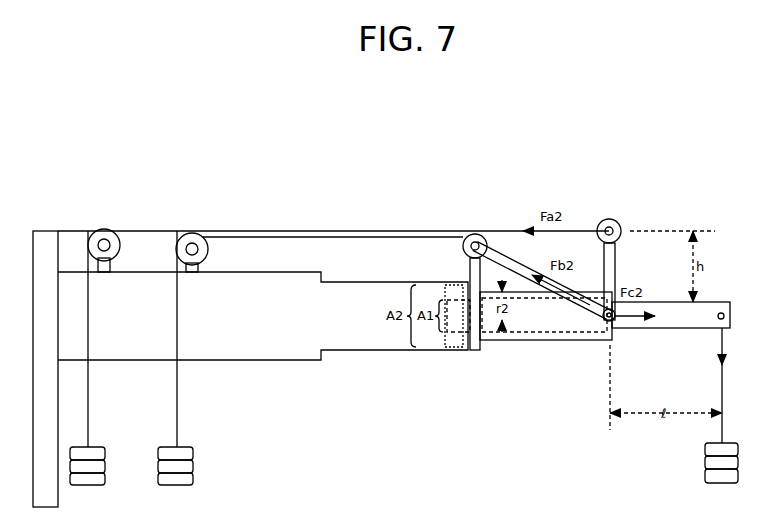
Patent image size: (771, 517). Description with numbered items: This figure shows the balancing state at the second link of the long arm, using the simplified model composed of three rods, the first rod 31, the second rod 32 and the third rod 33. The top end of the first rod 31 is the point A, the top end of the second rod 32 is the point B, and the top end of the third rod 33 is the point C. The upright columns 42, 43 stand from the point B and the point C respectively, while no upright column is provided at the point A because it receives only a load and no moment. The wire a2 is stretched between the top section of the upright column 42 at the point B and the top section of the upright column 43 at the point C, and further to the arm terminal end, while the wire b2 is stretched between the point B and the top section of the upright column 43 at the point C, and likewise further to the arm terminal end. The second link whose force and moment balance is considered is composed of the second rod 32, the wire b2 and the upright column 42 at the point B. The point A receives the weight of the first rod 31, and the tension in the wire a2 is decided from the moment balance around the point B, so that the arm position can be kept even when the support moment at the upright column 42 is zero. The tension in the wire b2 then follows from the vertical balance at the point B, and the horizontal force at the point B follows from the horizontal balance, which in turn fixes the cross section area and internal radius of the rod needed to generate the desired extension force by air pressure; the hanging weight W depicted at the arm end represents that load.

The first rod 31 is at (665, 330).
The second rod 32 is at (537, 342).
The third rod 33 is at (405, 352).
The upright column 42 is at (600, 240).
The upright column 43 is at (470, 270).
The wire a2 is at (328, 230).
The wire b2 is at (374, 236).
The point A is at (732, 332).
The point B is at (616, 345).
The point C is at (475, 353).
The weight W is at (727, 405).